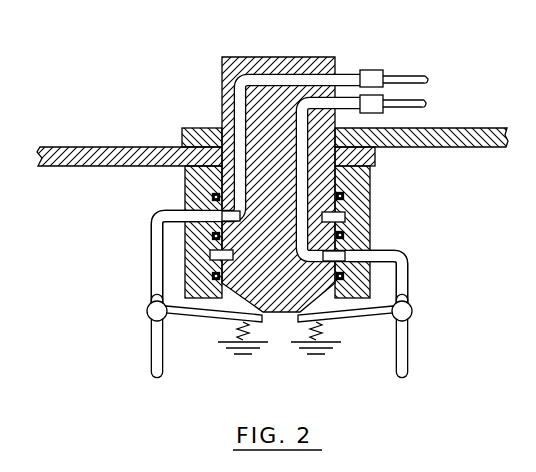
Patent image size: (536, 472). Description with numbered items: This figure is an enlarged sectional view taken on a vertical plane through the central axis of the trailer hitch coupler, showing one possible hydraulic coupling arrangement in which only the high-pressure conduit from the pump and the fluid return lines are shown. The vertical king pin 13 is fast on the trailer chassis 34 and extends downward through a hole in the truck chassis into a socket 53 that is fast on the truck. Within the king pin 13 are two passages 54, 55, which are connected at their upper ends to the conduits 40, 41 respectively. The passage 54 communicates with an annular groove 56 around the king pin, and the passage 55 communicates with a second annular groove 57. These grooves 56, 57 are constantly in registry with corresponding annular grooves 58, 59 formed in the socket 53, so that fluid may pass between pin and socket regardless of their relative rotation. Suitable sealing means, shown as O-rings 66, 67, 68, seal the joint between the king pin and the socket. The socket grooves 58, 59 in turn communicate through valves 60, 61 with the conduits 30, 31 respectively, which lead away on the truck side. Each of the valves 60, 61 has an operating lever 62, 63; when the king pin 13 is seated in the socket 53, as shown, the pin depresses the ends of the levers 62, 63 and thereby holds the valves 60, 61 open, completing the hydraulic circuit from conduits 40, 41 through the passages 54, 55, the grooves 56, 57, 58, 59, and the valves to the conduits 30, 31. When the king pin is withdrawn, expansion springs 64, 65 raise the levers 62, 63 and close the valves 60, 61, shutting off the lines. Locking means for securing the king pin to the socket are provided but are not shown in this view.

The king pin 13 is at (242, 57).
The passage 54 is at (318, 78).
The passage 55 is at (325, 104).
The conduit 40 is at (413, 72).
The conduit 41 is at (412, 100).
The trailer chassis 34 is at (482, 147).
The socket 53 is at (376, 173).
The annular groove 58 is at (212, 212).
The annular groove 56 is at (228, 218).
The O-ring 66 is at (343, 196).
The O-ring 67 is at (350, 227).
The annular groove 59 is at (343, 235).
The annular groove 57 is at (330, 258).
The O-ring 68 is at (343, 276).
The valve 60 is at (147, 311).
The valve 61 is at (412, 311).
The conduit 30 is at (152, 345).
The conduit 31 is at (406, 352).
The operating lever 62 is at (214, 319).
The operating lever 63 is at (350, 319).
The expansion spring 64 is at (247, 330).
The expansion spring 65 is at (303, 330).